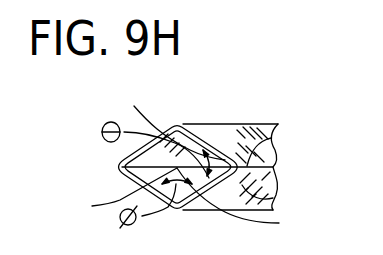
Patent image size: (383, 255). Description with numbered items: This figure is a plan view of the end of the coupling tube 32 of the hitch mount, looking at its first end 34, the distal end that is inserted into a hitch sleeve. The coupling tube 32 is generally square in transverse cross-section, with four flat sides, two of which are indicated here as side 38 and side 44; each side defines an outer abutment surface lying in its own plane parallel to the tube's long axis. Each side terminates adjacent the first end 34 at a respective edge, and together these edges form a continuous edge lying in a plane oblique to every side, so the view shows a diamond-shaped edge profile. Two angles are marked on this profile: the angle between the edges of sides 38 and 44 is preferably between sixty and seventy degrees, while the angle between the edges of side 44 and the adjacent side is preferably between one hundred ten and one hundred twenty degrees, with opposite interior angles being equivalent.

The coupling tube 32 is at (254, 125).
The first end 34 is at (231, 134).
The side 38 is at (271, 138).
The side 44 is at (273, 198).